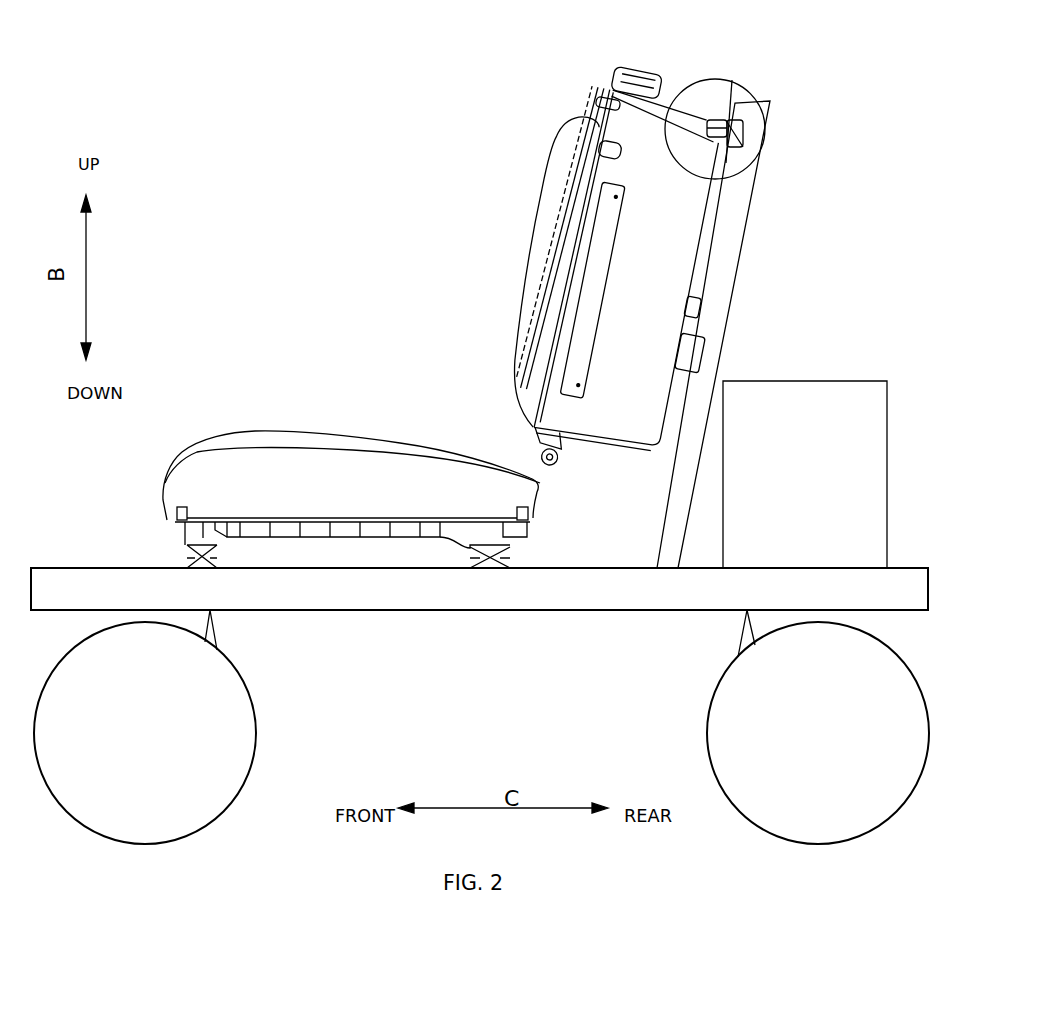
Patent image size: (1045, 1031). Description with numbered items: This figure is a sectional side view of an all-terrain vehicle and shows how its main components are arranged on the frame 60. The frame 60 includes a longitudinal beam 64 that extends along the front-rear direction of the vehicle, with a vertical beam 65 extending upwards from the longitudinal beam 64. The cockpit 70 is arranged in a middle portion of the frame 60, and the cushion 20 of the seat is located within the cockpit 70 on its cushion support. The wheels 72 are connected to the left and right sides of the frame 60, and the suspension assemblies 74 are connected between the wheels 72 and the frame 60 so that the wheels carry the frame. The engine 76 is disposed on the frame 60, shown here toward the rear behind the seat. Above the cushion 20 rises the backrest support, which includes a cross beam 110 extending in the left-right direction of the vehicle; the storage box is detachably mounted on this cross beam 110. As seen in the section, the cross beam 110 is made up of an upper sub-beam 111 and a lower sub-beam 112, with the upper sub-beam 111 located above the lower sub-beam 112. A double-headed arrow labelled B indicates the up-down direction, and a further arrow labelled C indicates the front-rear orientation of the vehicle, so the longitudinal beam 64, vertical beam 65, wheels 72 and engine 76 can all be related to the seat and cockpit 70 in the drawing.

The cushion 20 is at (291, 460).
The frame 60 is at (436, 655).
The longitudinal beam 64 is at (118, 572).
The vertical beam 65 is at (665, 547).
The cockpit 70 is at (218, 297).
The wheels 72 is at (255, 732).
The suspension assemblies 74 is at (217, 632).
The engine 76 is at (877, 485).
The cross beam 110 is at (862, 54).
The upper sub-beam 111 is at (738, 120).
The lower sub-beam 112 is at (703, 348).